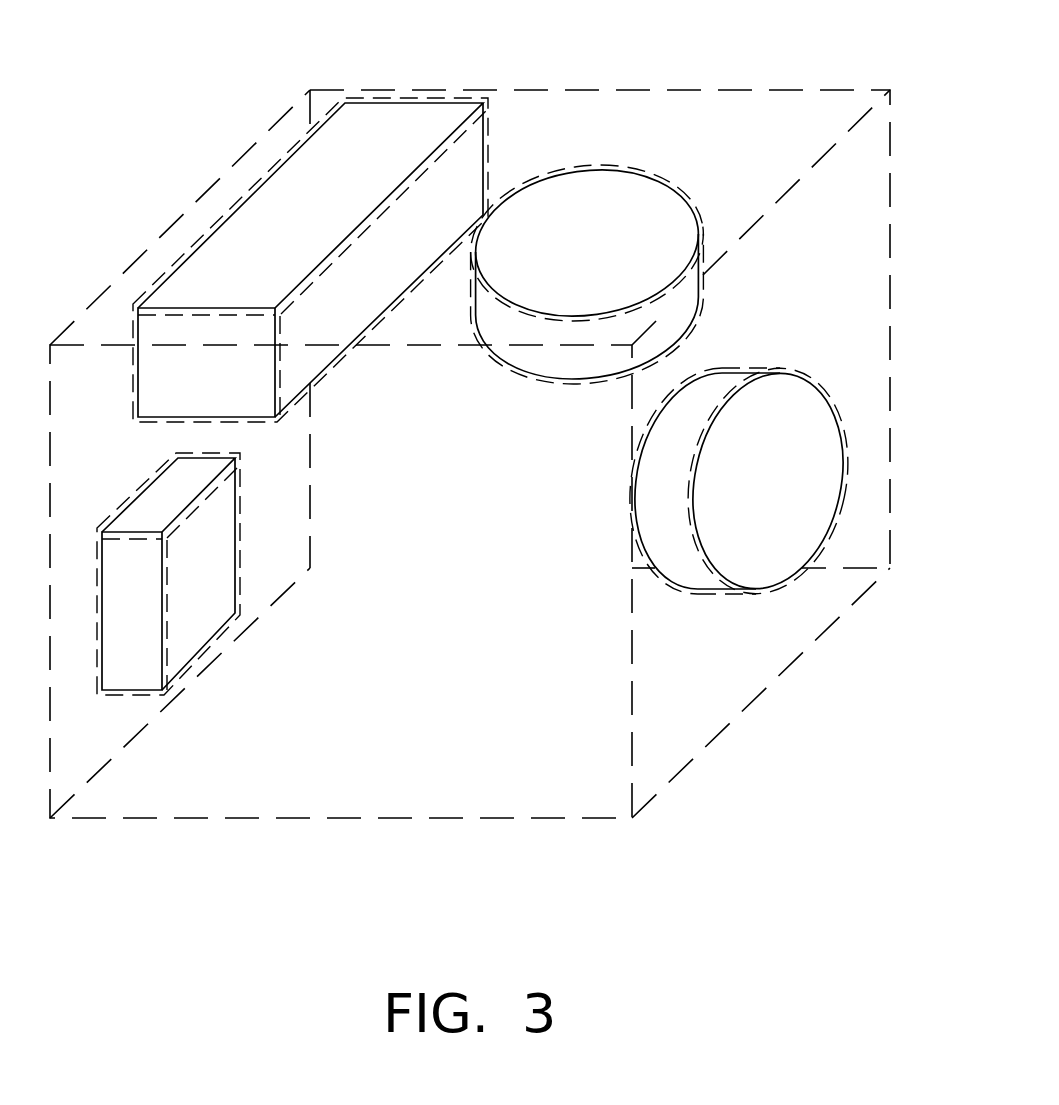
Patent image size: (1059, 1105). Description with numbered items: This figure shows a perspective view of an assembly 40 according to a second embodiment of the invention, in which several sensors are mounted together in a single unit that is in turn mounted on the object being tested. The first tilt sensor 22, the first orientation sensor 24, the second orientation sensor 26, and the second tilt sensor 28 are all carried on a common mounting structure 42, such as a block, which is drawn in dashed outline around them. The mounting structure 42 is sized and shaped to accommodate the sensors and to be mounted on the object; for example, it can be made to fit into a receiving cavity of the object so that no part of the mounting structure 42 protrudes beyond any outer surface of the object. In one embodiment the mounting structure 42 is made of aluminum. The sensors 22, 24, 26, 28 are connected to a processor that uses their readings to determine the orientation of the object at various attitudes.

The assembly 40 is at (173, 73).
The mounting structure 42 is at (597, 90).
The first tilt sensor 22 is at (190, 663).
The first orientation sensor 24 is at (564, 378).
The second orientation sensor 26 is at (700, 592).
The second tilt sensor 28 is at (332, 362).